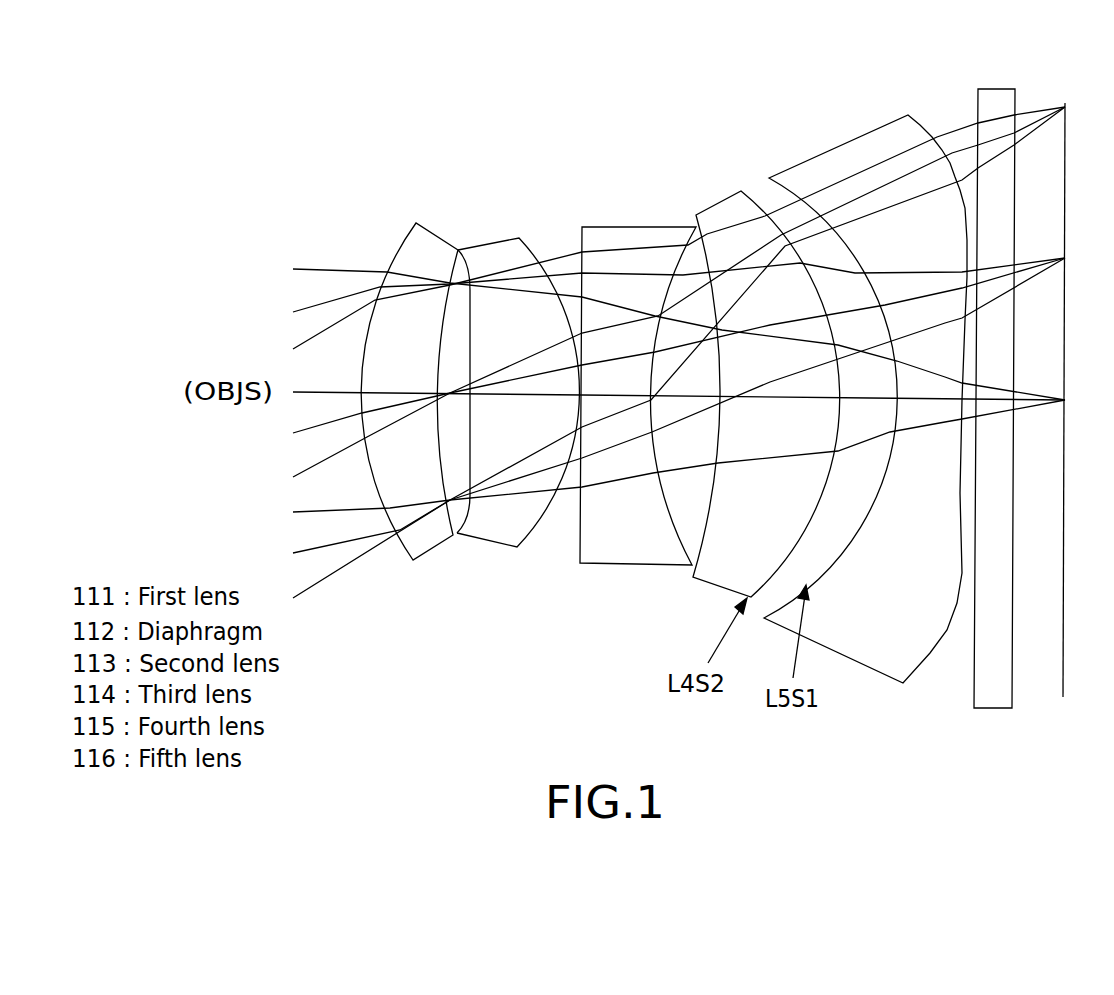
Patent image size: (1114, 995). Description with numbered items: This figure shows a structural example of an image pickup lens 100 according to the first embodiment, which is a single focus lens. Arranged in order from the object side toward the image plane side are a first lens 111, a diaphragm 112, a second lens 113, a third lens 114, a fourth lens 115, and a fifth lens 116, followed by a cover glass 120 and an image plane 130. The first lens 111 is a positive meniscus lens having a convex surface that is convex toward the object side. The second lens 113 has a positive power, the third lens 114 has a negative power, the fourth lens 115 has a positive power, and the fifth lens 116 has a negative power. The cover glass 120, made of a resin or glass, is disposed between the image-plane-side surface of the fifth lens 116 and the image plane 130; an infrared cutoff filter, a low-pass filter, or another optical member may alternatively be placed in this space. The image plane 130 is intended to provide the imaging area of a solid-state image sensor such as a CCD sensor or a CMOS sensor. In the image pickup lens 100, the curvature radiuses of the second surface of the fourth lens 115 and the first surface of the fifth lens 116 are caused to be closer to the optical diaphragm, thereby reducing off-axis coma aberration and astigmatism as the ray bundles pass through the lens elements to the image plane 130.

The image pickup lens 100 is at (706, 28).
The first lens 111 is at (409, 236).
The diaphragm 112 is at (458, 247).
The second lens 113 is at (506, 246).
The third lens 114 is at (634, 236).
The fourth lens 115 is at (718, 206).
The fifth lens 116 is at (841, 156).
The cover glass 120 is at (993, 708).
The image plane 130 is at (1063, 697).